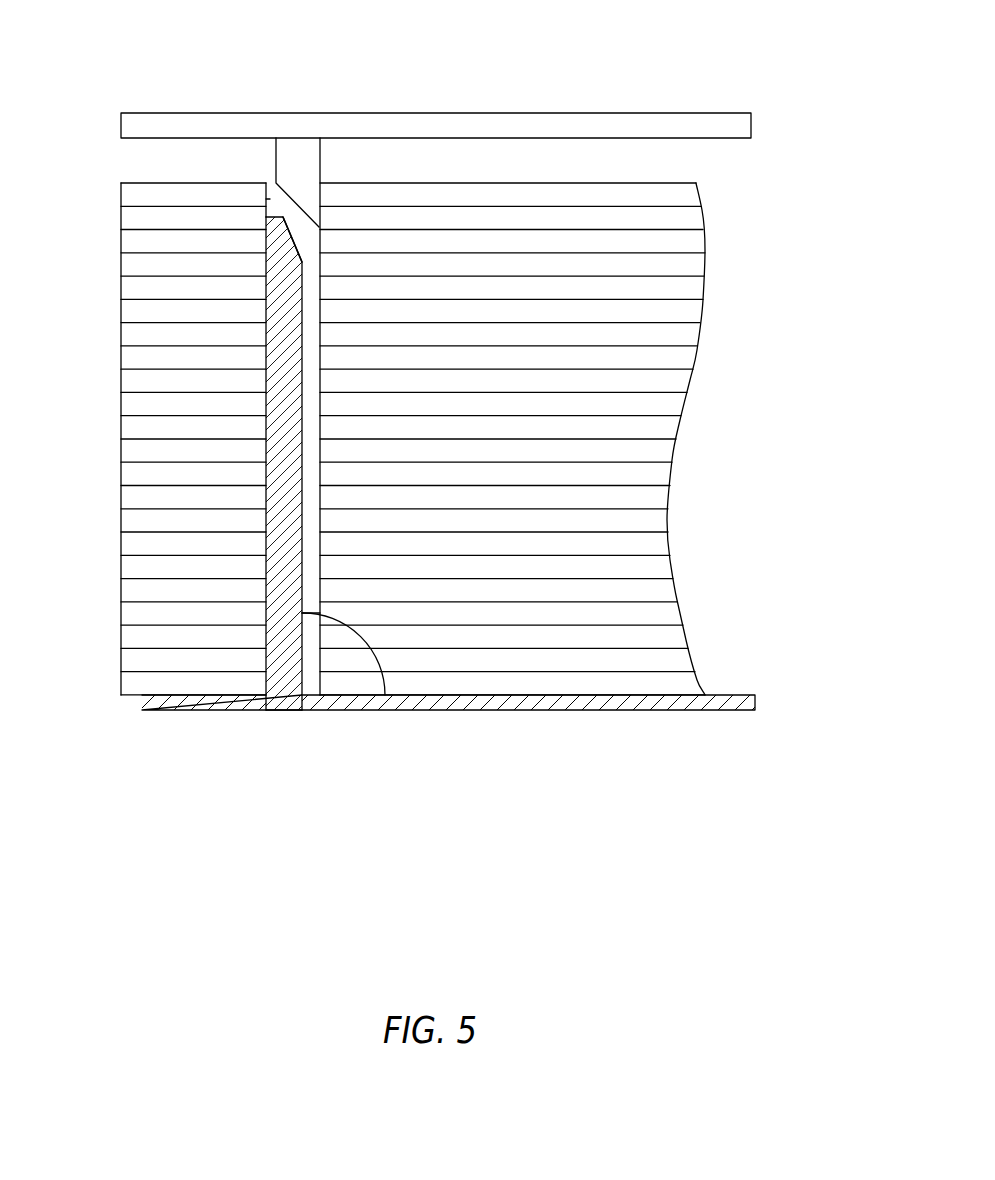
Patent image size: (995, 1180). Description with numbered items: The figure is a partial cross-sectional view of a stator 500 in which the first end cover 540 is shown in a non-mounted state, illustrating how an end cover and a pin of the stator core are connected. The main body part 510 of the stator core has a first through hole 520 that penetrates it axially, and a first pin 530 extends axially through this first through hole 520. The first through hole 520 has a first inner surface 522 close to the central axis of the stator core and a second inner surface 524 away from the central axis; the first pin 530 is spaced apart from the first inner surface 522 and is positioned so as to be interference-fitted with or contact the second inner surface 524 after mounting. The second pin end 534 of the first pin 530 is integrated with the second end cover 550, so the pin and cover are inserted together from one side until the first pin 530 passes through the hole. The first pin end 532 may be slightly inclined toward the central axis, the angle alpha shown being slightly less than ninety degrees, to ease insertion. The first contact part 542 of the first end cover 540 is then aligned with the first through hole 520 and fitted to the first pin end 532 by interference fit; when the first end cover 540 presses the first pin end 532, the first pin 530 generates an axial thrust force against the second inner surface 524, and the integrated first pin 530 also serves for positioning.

The stator 500 is at (665, 39).
The main body part 510 is at (121, 357).
The first through hole 520 is at (313, 682).
The first inner surface 522 is at (322, 423).
The second inner surface 524 is at (266, 199).
The first pin 530 is at (171, 485).
The first pin end 532 is at (275, 237).
The second pin end 534 is at (285, 688).
The first end cover 540 is at (390, 114).
The first contact part 542 is at (275, 153).
The second end cover 550 is at (519, 710).